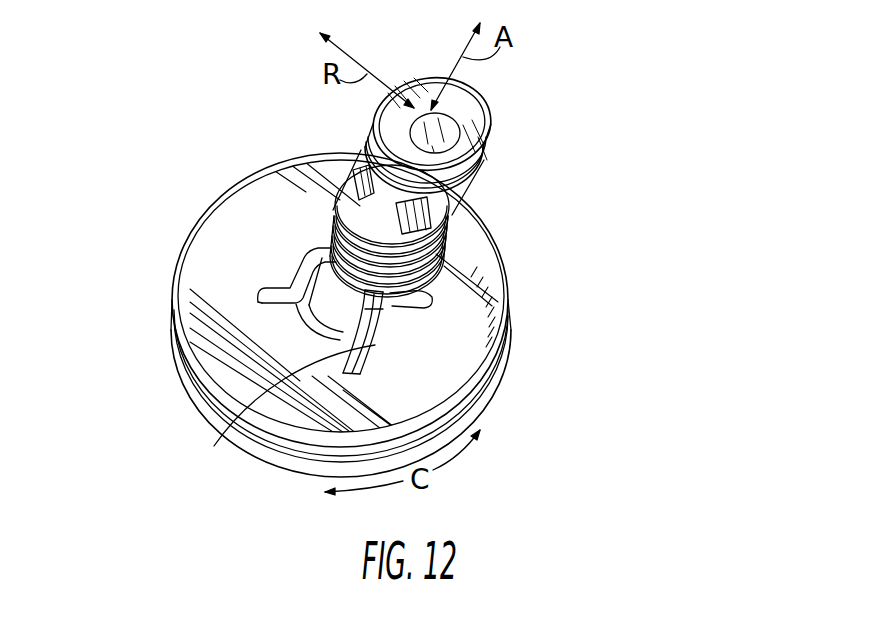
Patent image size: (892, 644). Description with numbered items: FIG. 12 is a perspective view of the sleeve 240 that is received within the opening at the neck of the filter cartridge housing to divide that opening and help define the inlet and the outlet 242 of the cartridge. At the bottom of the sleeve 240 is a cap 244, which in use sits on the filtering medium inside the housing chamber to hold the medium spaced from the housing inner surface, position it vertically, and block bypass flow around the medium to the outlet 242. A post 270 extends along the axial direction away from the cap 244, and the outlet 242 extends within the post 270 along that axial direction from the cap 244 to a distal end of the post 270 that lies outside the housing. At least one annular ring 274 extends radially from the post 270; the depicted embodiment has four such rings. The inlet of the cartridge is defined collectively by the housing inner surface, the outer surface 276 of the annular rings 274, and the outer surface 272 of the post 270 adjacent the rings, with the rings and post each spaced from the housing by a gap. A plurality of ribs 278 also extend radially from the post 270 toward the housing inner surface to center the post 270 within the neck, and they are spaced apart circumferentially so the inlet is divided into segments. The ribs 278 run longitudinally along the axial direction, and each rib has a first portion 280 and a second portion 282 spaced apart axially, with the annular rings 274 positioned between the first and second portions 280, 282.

The sleeve 240 is at (143, 135).
The outlet 242 is at (448, 110).
The cap 244 is at (457, 382).
The post 270 is at (340, 307).
The outer surface of post 272 is at (331, 280).
The annular ring 274 is at (398, 262).
The outer surface of annular rings 276 is at (322, 223).
The rib 278 is at (396, 292).
The first portion 280 is at (364, 192).
The second portion 282 is at (294, 307).